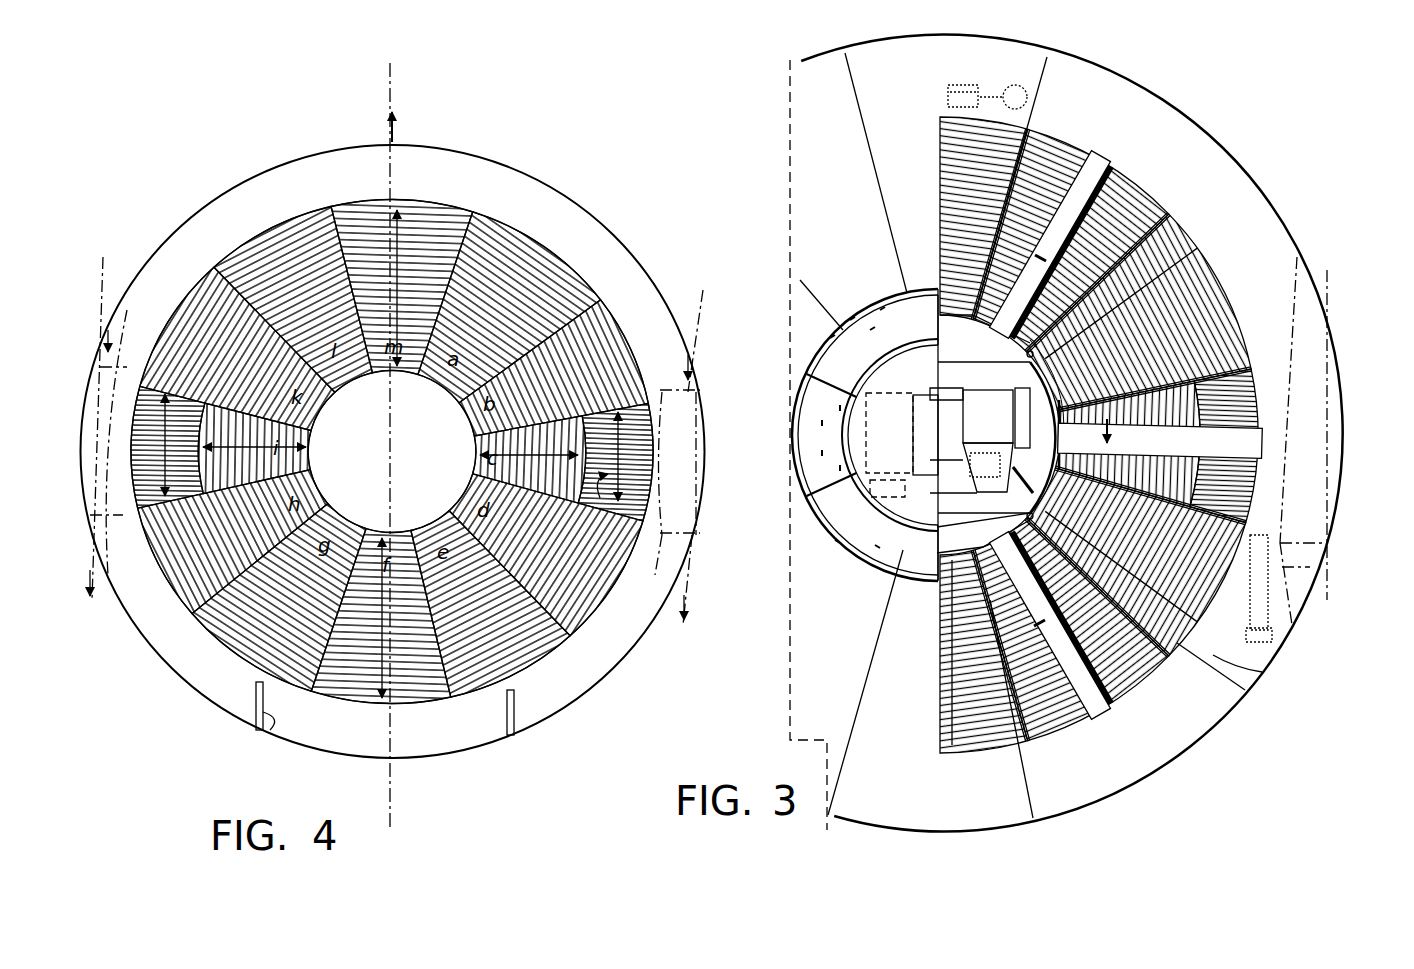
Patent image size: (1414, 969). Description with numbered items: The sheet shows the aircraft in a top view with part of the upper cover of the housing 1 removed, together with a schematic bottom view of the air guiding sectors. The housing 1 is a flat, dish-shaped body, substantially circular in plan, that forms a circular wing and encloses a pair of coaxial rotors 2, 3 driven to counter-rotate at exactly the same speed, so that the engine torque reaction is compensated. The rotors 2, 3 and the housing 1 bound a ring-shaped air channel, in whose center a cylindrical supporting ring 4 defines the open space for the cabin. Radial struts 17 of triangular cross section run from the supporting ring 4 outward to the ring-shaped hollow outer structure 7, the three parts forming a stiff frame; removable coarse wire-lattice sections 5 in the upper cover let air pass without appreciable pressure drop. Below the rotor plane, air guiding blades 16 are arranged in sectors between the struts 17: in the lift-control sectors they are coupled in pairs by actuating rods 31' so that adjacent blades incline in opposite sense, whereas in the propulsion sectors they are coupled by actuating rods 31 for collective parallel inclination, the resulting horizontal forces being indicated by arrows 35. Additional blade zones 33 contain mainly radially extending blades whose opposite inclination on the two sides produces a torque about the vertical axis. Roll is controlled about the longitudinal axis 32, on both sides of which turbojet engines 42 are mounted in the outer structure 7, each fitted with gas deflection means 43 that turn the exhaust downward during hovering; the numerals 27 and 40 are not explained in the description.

In FIG. 3, the housing 1 is at (1147, 157).
In FIG. 3, the rotor 2 is at (1093, 700).
In FIG. 3, the rotor 3 is at (1247, 437).
In FIG. 3, the cylindrical supporting ring 4 is at (1025, 503).
In FIG. 3, the wire-lattice section 5 is at (833, 183).
In FIG. 3, the outer structure 7 is at (1097, 93).
In FIG. 4, the air guiding blade 16 is at (320, 237).
In FIG. 3, the radial strut 17 is at (1227, 358).
In FIG. 4, the core segment 27 is at (438, 237).
In FIG. 3, the actuating rod 31 is at (1230, 693).
In FIG. 3, the actuating rod 31' is at (1268, 688).
In FIG. 4, the longitudinal axis 32 is at (392, 90).
In FIG. 4, the blade zone 33 is at (140, 417).
In FIG. 3, the blade zone 33 is at (1250, 483).
In FIG. 4, the arrow 35 is at (408, 214).
In FIG. 4, the support foot 40 is at (273, 722).
In FIG. 4, the turbojet engine 42 is at (108, 445).
In FIG. 3, the turbojet engine 42 is at (1307, 443).
In FIG. 4, the gas deflection means 43 is at (98, 533).
In FIG. 3, the gas deflection means 43 is at (1310, 553).